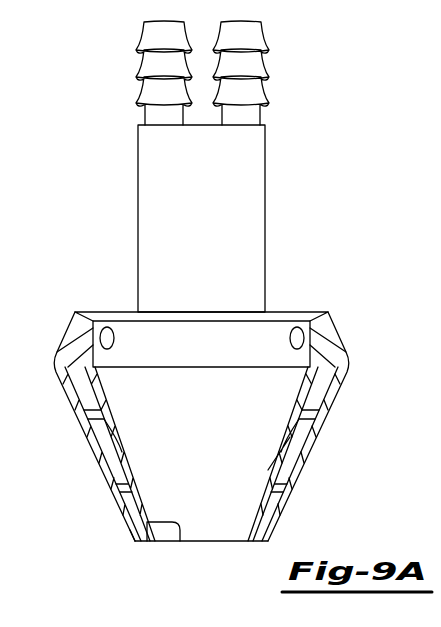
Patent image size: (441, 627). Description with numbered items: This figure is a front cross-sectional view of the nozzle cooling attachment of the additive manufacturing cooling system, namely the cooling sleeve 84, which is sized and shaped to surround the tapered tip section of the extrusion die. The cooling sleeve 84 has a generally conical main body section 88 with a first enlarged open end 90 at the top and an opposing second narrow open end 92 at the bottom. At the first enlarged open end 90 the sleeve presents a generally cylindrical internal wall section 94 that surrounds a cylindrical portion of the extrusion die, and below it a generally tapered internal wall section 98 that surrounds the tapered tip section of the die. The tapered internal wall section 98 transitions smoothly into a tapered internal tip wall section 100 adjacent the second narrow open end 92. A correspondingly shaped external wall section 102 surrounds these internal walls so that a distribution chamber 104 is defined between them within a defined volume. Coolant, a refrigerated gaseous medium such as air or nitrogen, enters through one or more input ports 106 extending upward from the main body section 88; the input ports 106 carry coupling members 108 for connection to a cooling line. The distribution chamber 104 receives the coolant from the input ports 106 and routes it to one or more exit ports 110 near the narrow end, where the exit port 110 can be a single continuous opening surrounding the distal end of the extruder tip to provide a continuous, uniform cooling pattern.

The cooling sleeve 84 is at (75, 133).
The main body section 88 is at (348, 372).
The first enlarged open end 90 is at (287, 317).
The second narrow open end 92 is at (227, 541).
The cylindrical internal wall section 94 is at (127, 317).
The tapered internal wall section 98 is at (128, 452).
The tapered internal tip wall section 100 is at (180, 541).
The external wall section 102 is at (102, 472).
The distribution chamber 104 is at (310, 445).
The input ports 106 is at (253, 187).
The coupling members 108 is at (256, 63).
The exit port 110 is at (150, 542).